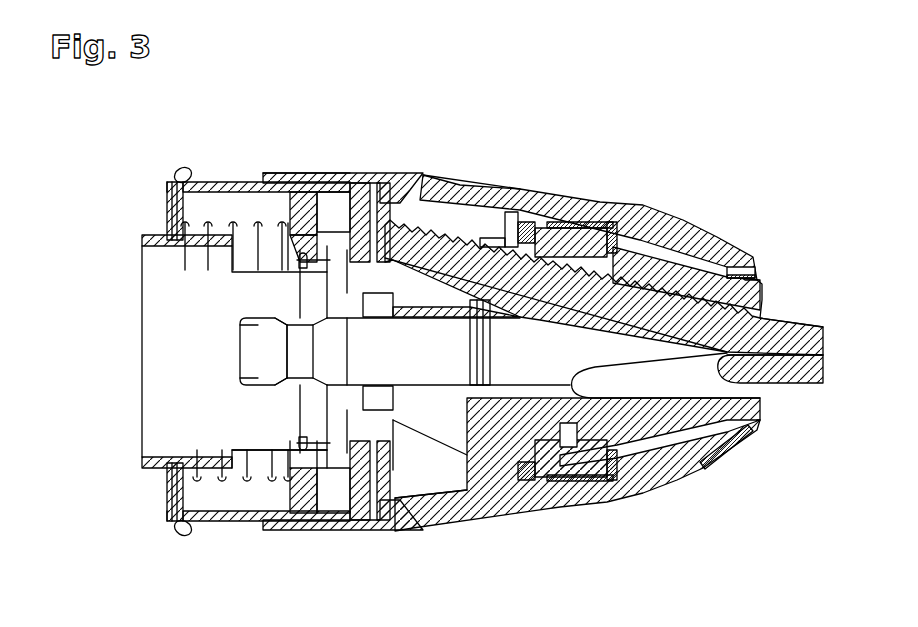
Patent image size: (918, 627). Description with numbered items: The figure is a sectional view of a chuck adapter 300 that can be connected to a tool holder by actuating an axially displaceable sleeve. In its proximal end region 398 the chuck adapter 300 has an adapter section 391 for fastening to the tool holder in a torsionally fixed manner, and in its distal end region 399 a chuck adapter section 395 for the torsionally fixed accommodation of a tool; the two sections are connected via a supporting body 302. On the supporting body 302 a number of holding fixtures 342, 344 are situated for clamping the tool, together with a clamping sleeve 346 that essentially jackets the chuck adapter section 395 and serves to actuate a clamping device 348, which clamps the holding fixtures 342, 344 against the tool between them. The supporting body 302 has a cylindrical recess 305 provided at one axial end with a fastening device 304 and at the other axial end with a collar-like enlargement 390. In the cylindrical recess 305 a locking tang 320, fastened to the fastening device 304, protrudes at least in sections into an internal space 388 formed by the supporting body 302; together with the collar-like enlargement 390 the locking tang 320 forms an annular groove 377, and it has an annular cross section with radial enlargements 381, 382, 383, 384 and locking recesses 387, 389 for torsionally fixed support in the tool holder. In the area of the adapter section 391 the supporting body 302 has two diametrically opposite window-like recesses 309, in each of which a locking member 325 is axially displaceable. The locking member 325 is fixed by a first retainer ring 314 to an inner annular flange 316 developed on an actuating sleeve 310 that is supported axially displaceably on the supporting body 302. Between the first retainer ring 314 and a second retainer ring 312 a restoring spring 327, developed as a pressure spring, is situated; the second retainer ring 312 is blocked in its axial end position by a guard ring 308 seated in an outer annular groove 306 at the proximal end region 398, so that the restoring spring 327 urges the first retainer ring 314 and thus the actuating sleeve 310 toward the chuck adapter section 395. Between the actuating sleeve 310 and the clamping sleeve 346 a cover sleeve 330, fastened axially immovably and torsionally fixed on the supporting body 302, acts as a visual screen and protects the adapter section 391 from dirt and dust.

The chuck adapter 300 is at (718, 140).
The supporting body 302 is at (140, 237).
The fastening device 304 is at (508, 356).
The cylindrical recess 305 is at (455, 335).
The outer annular groove 306 is at (163, 452).
The guard ring 308 is at (167, 232).
The window-like recess 309 is at (233, 257).
The actuating sleeve 310 is at (217, 186).
The second retainer ring 312 is at (160, 500).
The first retainer ring 314 is at (270, 186).
The inner annular flange 316 is at (298, 520).
The locking tang 320 is at (287, 384).
The locking member 325 is at (178, 478).
The restoring spring 327 is at (184, 536).
The cover sleeve 330 is at (378, 180).
The holding fixture 342 is at (803, 337).
The holding fixture 344 is at (806, 380).
The clamping sleeve 346 is at (673, 237).
The clamping device 348 is at (597, 200).
The annular groove 377 is at (360, 500).
The radial enlargement 381 is at (260, 355).
The radial enlargement 382 is at (458, 412).
The radial enlargement 383 is at (298, 446).
The radial enlargement 384 is at (388, 518).
The locking recess 387 is at (286, 311).
The internal space 388 is at (165, 292).
The locking recess 389 is at (250, 392).
The collar-like enlargement 390 is at (402, 309).
The adapter section 391 is at (296, 165).
The chuck adapter section 395 is at (628, 512).
The proximal end region 398 is at (155, 181).
The distal end region 399 is at (778, 438).